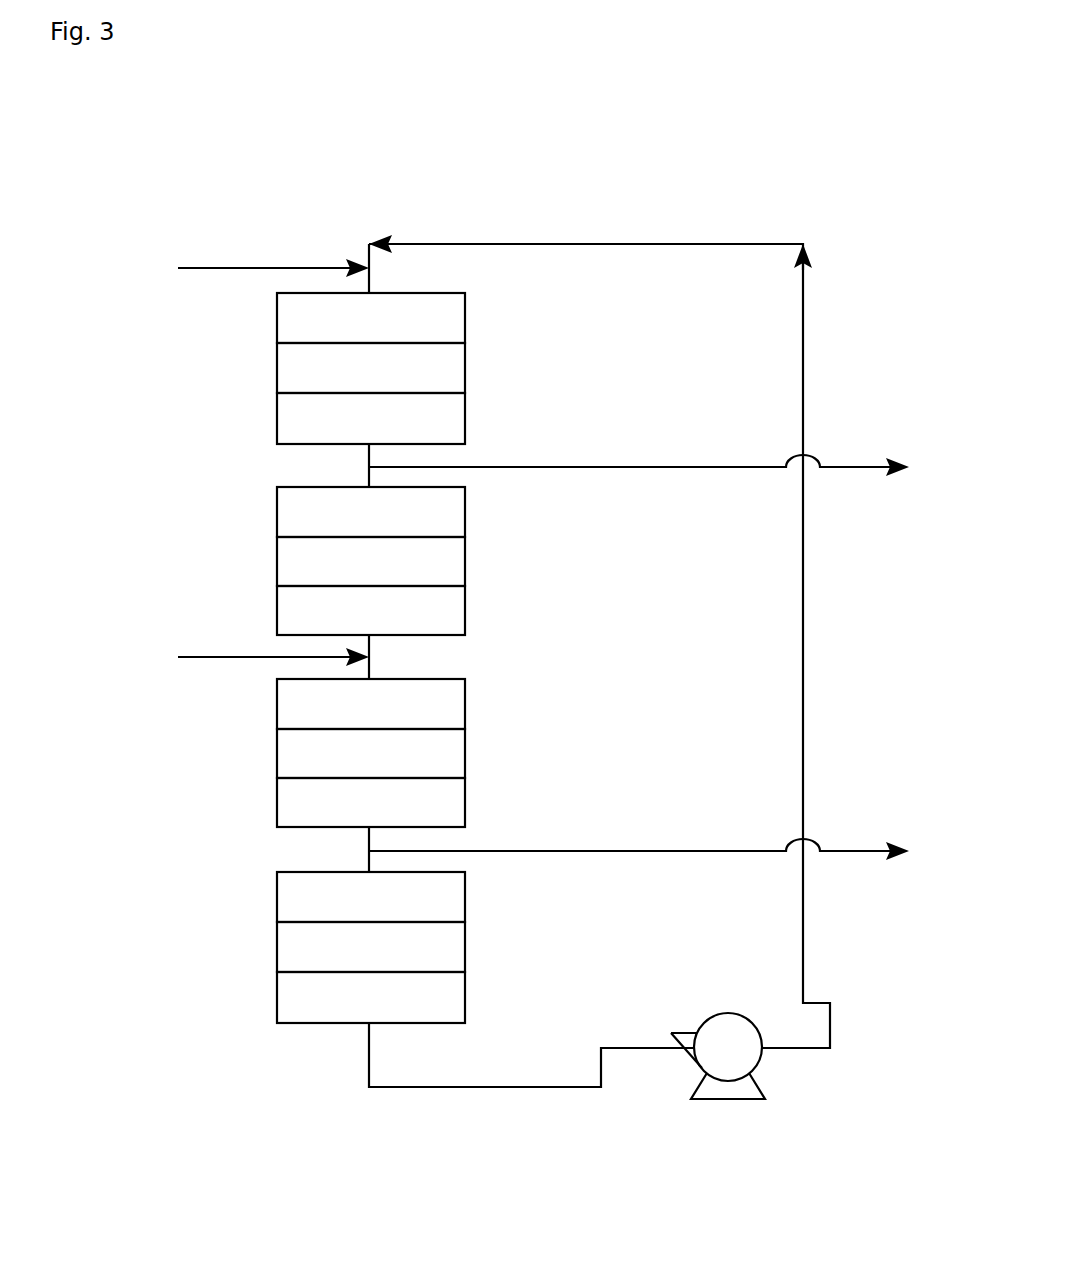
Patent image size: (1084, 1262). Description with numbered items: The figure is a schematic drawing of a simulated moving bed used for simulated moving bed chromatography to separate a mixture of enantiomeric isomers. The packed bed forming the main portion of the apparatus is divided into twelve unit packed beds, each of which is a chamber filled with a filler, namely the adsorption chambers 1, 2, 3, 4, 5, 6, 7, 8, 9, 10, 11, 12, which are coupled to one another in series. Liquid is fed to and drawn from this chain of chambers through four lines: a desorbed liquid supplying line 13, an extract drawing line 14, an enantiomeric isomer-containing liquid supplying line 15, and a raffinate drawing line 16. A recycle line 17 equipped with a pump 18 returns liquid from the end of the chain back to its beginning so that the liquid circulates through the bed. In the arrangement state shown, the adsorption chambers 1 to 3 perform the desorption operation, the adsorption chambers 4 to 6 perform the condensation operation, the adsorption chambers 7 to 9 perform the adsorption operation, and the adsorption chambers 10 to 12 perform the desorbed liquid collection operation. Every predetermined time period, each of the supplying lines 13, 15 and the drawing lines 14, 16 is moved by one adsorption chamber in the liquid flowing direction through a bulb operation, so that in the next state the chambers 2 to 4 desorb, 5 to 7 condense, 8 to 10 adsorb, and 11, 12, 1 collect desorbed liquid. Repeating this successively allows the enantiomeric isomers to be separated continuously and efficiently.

The adsorption chamber 1 is at (465, 310).
The adsorption chamber 2 is at (465, 363).
The adsorption chamber 3 is at (465, 413).
The adsorption chamber 4 is at (465, 511).
The adsorption chamber 5 is at (465, 565).
The adsorption chamber 6 is at (465, 613).
The adsorption chamber 7 is at (465, 697).
The adsorption chamber 8 is at (465, 752).
The adsorption chamber 9 is at (465, 800).
The adsorption chamber 10 is at (465, 893).
The adsorption chamber 11 is at (465, 947).
The adsorption chamber 12 is at (465, 997).
The desorbed liquid supplying line 13 is at (250, 268).
The extract drawing line 14 is at (694, 467).
The enantiomeric isomer-containing liquid supplying line 15 is at (198, 657).
The raffinate drawing line 16 is at (703, 851).
The recycle line 17 is at (803, 580).
The pump 18 is at (726, 1013).